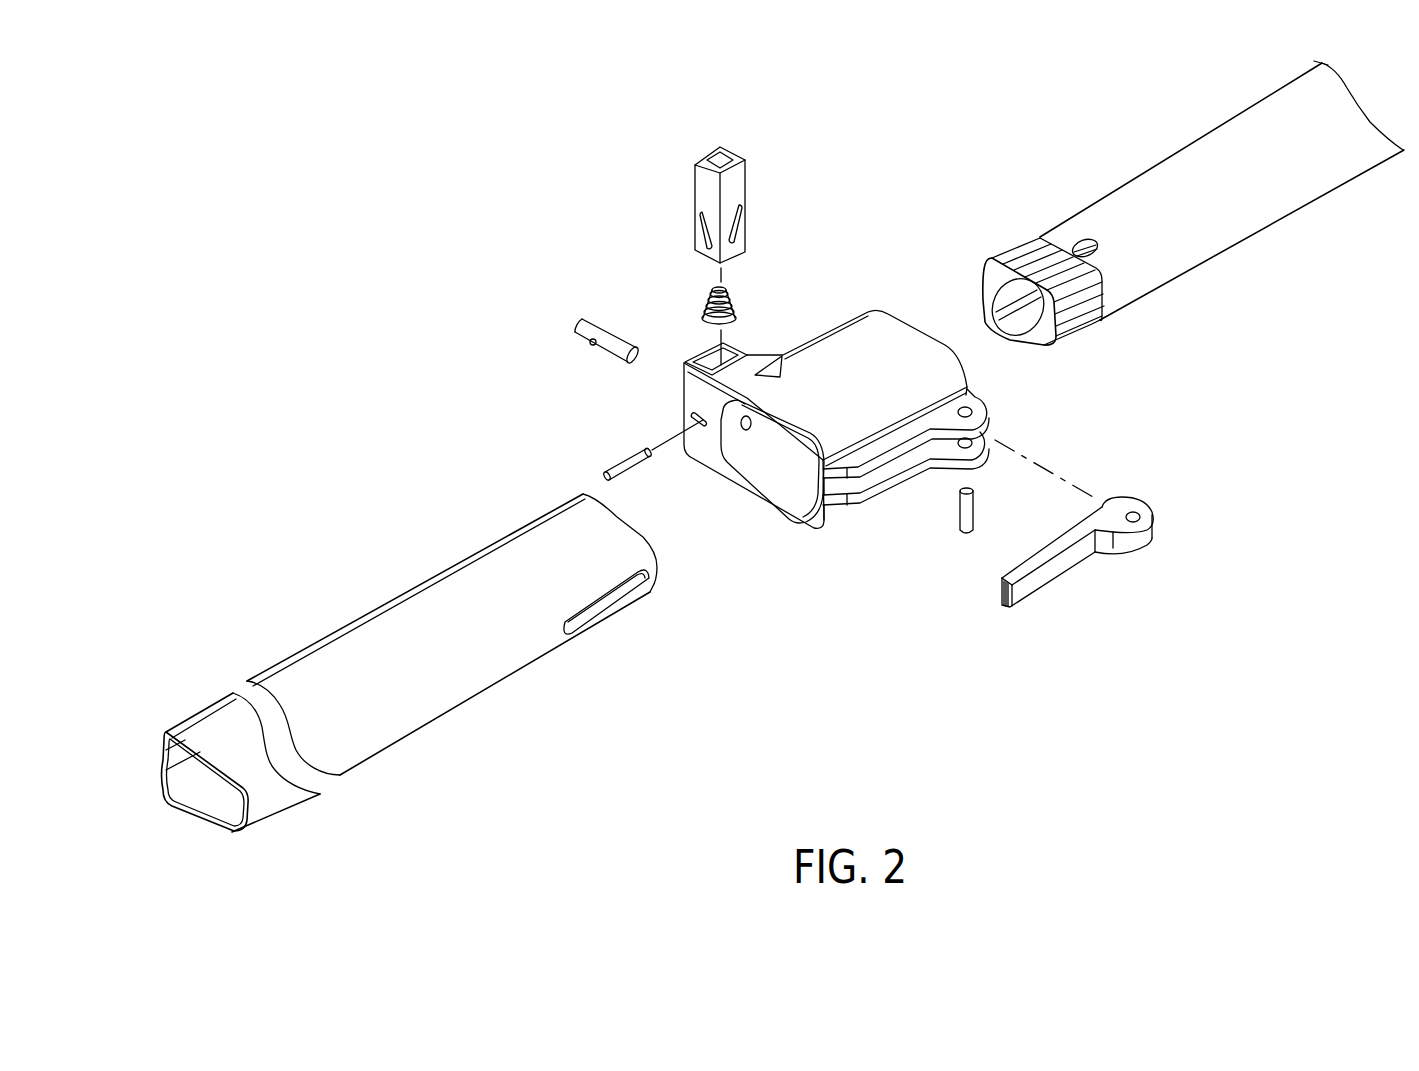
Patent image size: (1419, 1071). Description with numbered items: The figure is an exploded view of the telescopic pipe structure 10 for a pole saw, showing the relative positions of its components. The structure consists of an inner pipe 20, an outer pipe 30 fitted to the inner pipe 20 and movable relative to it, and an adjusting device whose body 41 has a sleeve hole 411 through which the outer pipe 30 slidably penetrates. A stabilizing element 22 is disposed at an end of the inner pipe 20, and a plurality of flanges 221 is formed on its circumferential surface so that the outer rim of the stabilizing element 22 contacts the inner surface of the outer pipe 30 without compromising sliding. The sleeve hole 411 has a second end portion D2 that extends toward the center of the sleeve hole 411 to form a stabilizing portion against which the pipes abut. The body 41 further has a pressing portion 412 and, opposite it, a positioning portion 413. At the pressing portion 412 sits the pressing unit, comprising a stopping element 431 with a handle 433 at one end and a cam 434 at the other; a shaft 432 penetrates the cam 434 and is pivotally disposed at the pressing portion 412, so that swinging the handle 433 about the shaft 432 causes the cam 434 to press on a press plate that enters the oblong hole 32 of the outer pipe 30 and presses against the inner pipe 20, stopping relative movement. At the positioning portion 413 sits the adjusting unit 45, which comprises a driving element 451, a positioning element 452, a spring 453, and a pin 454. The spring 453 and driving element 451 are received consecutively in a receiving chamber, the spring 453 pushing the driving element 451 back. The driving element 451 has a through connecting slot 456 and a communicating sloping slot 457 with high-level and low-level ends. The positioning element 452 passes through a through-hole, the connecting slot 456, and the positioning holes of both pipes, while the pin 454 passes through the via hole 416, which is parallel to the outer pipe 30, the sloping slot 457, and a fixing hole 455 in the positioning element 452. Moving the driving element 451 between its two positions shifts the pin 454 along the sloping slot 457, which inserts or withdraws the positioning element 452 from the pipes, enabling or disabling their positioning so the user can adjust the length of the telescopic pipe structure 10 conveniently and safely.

The telescopic pipe structure 10 is at (339, 210).
The inner pipe 20 is at (1170, 200).
The stabilizing element 22 is at (1086, 317).
The flanges 221 is at (1095, 315).
The outer pipe 30 is at (422, 623).
The oblong hole 32 is at (597, 603).
The body 41 is at (834, 426).
The sleeve hole 411 is at (772, 499).
The pressing portion 412 is at (897, 470).
The positioning portion 413 is at (757, 375).
The via hole 416 is at (702, 427).
The second end portion D2 is at (807, 513).
The stopping element 431 is at (1113, 572).
The shaft 432 is at (965, 532).
The handle 433 is at (1035, 583).
The cam 434 is at (1147, 510).
The adjusting unit 45 is at (565, 164).
The driving element 451 is at (696, 205).
The positioning element 452 is at (570, 320).
The spring 453 is at (707, 305).
The pin 454 is at (617, 458).
The fixing hole 455 is at (590, 343).
The connecting slot 456 is at (737, 215).
The sloping slot 457 is at (700, 233).